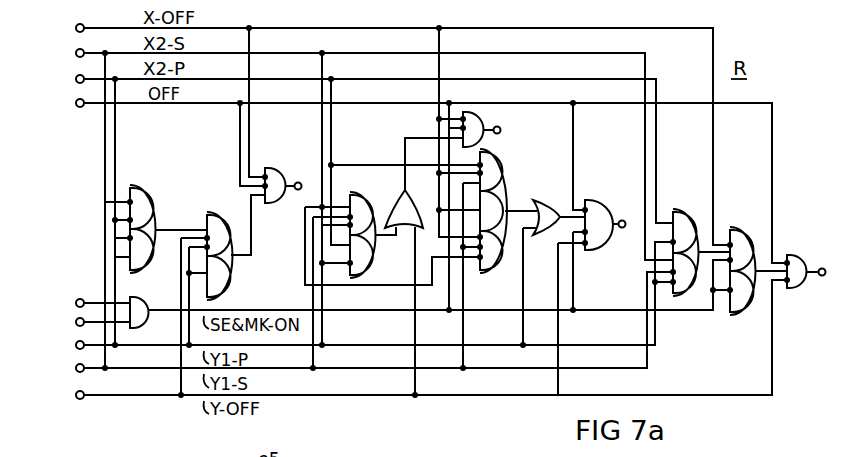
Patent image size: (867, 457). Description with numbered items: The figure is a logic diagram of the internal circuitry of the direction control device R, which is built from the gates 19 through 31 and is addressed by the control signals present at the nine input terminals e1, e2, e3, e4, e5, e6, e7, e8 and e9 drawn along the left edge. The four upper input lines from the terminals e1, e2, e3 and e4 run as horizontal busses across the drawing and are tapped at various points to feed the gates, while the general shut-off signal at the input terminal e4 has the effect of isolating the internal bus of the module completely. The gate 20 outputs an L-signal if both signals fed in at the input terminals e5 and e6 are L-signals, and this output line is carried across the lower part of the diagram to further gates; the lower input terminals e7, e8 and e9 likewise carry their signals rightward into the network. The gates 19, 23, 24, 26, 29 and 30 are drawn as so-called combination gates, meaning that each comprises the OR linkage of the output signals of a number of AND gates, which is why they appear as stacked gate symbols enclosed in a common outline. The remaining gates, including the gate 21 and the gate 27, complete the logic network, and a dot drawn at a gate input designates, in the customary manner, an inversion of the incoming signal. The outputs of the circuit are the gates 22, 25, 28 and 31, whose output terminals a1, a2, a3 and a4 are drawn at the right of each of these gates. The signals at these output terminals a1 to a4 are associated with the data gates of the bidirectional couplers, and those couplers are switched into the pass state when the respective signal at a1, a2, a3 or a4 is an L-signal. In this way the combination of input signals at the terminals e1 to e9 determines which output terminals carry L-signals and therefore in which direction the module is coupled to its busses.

The combination gate 19 is at (137, 188).
The gate 20 is at (138, 297).
The gate 21 is at (398, 208).
The gate 22 is at (269, 168).
The combination gate 23 is at (229, 283).
The combination gate 24 is at (504, 195).
The gate 25 is at (479, 127).
The combination gate 26 is at (374, 263).
The gate 27 is at (548, 236).
The gate 28 is at (597, 200).
The combination gate 29 is at (683, 211).
The combination gate 30 is at (740, 229).
The gate 31 is at (796, 256).
The input terminal e1 is at (391, 131).
The input terminal e2 is at (362, 151).
The input terminal e3 is at (362, 145).
The input terminal e4 is at (419, 177).
The input terminal e5 is at (91, 304).
The input terminal e6 is at (91, 323).
The input terminal e7 is at (362, 300).
The input terminal e8 is at (362, 326).
The input terminal e9 is at (419, 344).
The output terminal a1 is at (297, 174).
The output terminal a2 is at (510, 130).
The output terminal a3 is at (621, 214).
The output terminal a4 is at (816, 258).